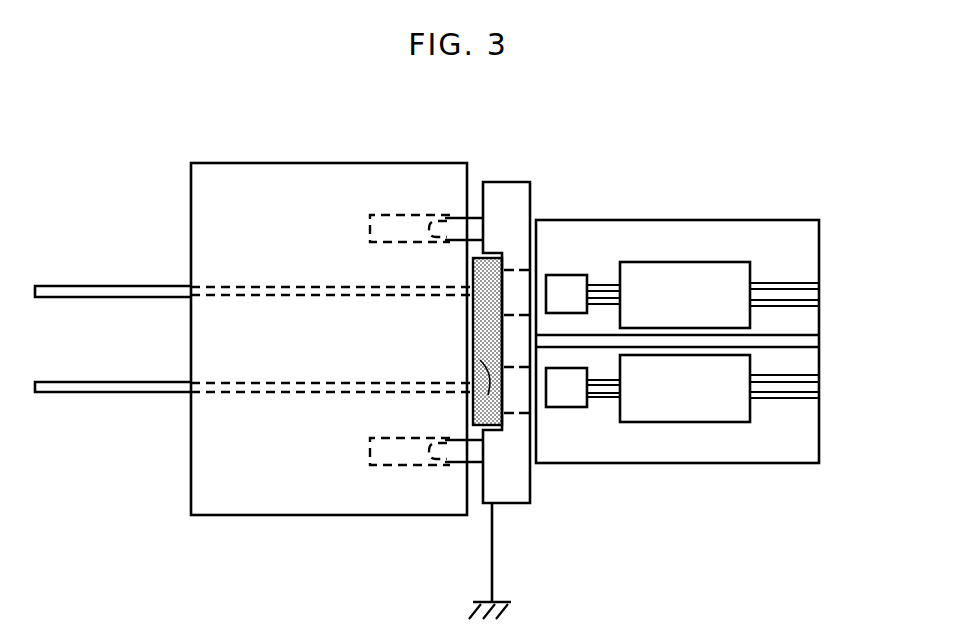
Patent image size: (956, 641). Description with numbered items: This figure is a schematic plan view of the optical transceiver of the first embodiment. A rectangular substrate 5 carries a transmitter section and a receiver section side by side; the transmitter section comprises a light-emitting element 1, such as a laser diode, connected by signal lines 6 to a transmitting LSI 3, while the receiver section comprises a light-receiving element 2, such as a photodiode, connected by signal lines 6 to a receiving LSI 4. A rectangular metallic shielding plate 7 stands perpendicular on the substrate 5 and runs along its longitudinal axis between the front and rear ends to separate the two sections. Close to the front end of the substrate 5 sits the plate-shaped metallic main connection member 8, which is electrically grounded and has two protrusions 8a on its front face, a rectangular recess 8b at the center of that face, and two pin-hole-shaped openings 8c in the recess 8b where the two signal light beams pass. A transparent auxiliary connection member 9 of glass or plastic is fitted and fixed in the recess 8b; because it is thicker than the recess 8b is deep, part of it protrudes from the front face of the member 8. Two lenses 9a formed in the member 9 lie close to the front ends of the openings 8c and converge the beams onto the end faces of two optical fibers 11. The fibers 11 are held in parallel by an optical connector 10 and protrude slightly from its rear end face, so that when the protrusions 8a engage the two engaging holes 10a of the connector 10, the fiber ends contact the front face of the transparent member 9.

The light-emitting element 1 is at (568, 283).
The light-receiving element 2 is at (567, 398).
The transmitting LSI 3 is at (670, 270).
The receiving LSI 4 is at (688, 412).
The substrate 5 is at (714, 228).
The signal lines 6 is at (792, 283).
The shielding plate 7 is at (822, 341).
The main connection member 8 is at (505, 182).
The protrusions 8a is at (425, 218).
The recess 8b is at (473, 405).
The openings 8c is at (514, 405).
The auxiliary connection member 9 is at (480, 322).
The lenses 9a is at (490, 382).
The optical connector 10 is at (270, 178).
The engaging holes 10a is at (375, 213).
The optical fibers 11 is at (112, 287).